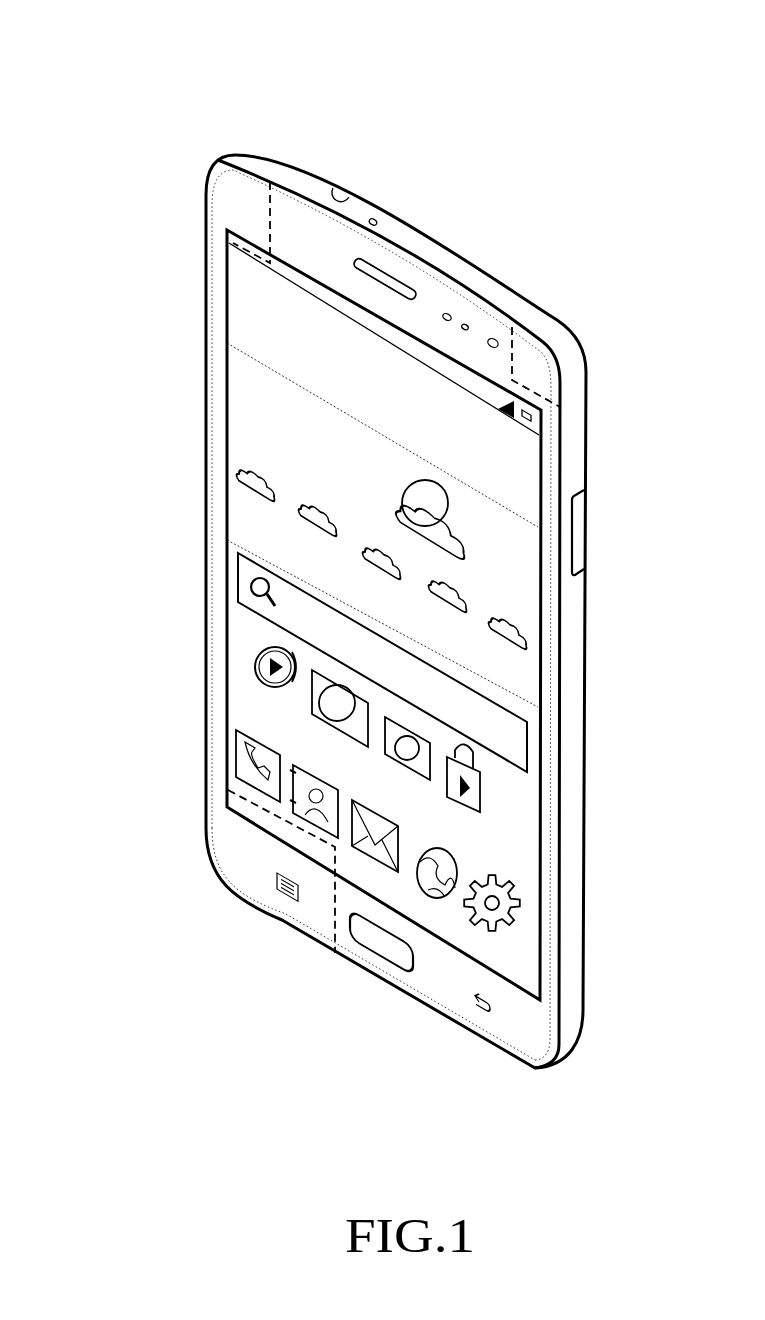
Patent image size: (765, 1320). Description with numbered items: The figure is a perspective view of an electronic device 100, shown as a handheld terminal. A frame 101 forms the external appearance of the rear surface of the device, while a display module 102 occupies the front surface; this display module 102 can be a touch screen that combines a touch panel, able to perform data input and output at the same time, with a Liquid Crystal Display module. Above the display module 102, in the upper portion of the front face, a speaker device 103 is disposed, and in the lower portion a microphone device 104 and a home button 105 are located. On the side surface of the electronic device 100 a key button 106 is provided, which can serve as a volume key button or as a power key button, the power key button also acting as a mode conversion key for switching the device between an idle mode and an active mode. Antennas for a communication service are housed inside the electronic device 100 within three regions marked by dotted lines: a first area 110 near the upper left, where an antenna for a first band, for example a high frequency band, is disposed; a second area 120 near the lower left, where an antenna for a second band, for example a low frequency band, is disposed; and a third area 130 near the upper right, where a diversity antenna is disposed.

The electronic device 100 is at (162, 114).
The frame 101 is at (567, 1013).
The display module 102 is at (232, 411).
The speaker device 103 is at (393, 270).
The microphone device 104 is at (497, 1050).
The home button 105 is at (383, 944).
The key button 106 is at (596, 519).
The first area 110 is at (250, 195).
The second area 120 is at (252, 852).
The third area 130 is at (540, 356).